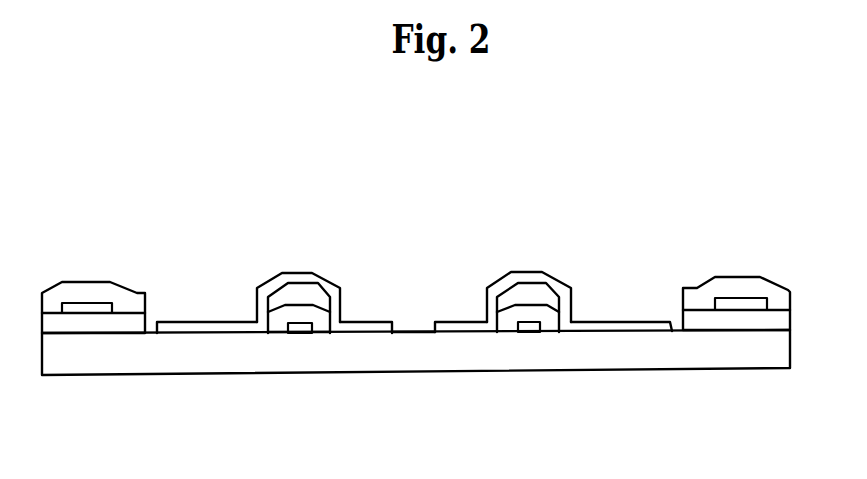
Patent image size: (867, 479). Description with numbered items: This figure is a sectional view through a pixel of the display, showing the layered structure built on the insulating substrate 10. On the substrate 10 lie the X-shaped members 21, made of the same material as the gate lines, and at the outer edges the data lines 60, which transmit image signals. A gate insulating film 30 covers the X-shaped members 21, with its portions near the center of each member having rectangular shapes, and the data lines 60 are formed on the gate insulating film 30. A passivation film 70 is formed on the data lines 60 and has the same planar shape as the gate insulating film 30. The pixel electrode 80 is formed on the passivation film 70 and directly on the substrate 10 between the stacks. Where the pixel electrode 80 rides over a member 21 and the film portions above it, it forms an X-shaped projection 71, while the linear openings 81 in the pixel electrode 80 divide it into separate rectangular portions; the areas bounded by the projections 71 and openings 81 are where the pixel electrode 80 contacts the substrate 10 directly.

The insulating substrate 10 is at (402, 363).
The X-shaped member 21 is at (300, 330).
The gate insulating film 30 is at (123, 327).
The data line 60 is at (85, 303).
The passivation film 70 is at (113, 290).
The X-shaped projection 71 is at (342, 265).
The pixel electrode 80 is at (213, 322).
The linear opening 81 is at (413, 322).